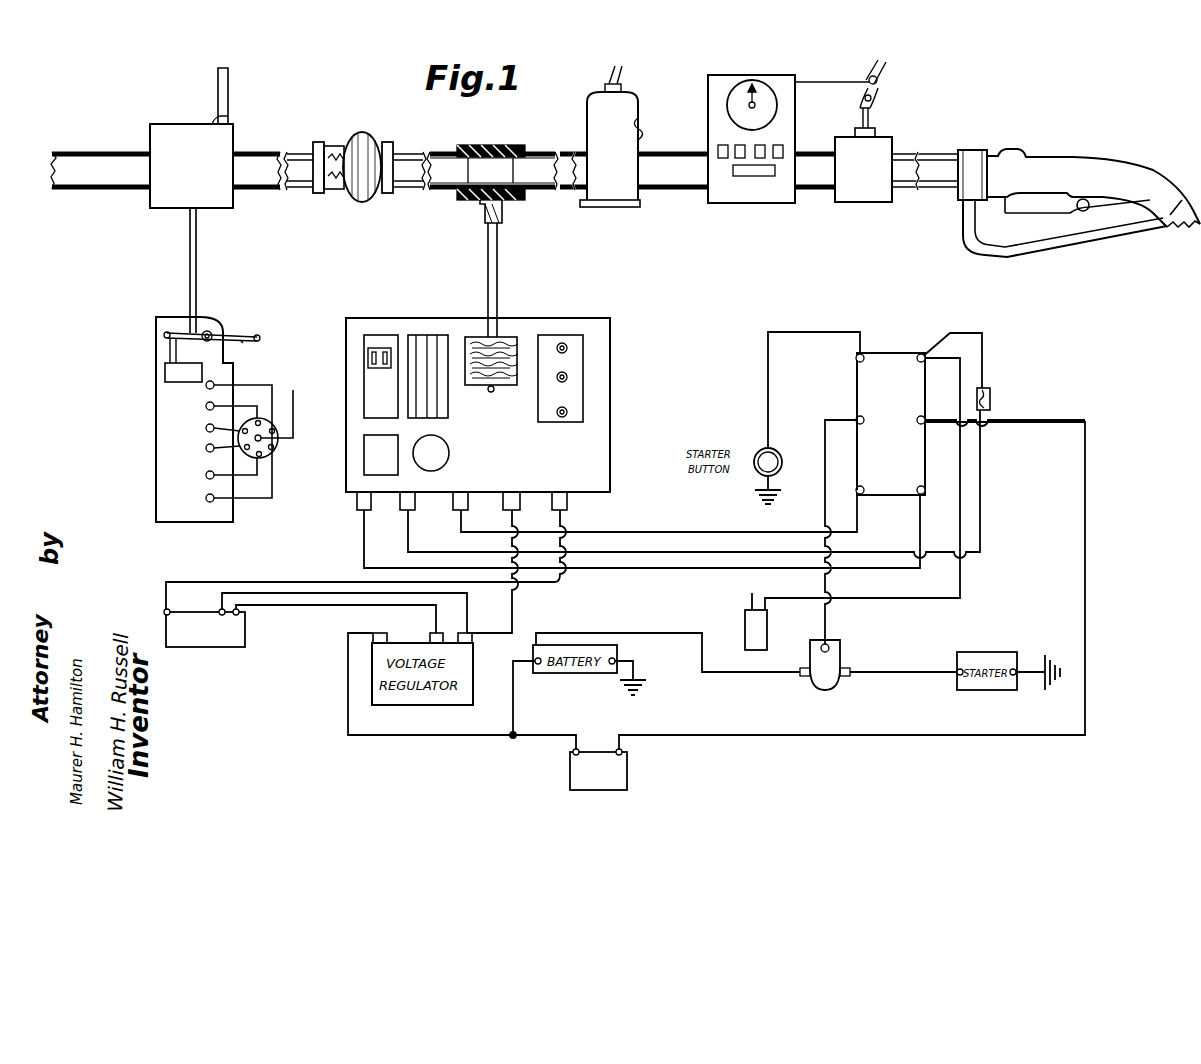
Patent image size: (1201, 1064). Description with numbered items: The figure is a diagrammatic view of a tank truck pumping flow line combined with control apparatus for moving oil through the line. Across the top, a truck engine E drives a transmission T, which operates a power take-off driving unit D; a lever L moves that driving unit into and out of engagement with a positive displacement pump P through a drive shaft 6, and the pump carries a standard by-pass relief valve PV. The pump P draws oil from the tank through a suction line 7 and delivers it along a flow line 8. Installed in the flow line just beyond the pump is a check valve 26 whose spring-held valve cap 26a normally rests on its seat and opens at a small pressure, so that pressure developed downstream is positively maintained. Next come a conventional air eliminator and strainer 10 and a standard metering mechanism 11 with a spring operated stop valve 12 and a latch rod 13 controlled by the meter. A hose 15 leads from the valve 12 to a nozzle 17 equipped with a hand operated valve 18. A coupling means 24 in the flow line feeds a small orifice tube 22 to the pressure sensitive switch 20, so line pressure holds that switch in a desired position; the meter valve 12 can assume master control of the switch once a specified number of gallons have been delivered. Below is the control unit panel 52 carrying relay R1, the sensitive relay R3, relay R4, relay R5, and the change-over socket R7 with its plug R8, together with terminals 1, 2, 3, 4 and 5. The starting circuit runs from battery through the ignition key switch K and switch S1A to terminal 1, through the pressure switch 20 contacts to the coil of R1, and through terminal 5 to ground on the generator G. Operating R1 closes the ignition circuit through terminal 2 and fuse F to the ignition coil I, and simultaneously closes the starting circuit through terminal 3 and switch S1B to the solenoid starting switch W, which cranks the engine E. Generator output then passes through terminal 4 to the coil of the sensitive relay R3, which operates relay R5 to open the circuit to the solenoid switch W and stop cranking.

The suction line 7 is at (85, 152).
The pump P is at (166, 208).
The by-pass relief valve PV is at (226, 100).
The flow line 8 is at (253, 152).
The drive shaft 6 is at (198, 268).
The check valve 26 is at (355, 172).
The spring-held valve cap 26a is at (362, 142).
The coupling means 24 is at (490, 147).
The small orifice tube 22 is at (500, 243).
The air eliminator and strainer 10 is at (642, 122).
The metering mechanism 11 is at (777, 200).
The latch rod 13 is at (836, 84).
The spring operated stop valve 12 is at (896, 145).
The hose 15 is at (942, 156).
The hand operated valve 18 is at (1022, 170).
The nozzle 17 is at (1170, 188).
The truck engine E is at (198, 409).
The driving unit D is at (180, 373).
The transmission T is at (230, 326).
The lever L is at (243, 343).
The relay panel 52 is at (483, 419).
The relay R1 is at (425, 335).
The pressure sensitive switch 20 is at (516, 329).
The sensitive relay R3 is at (438, 450).
The relay R4 is at (573, 396).
The relay R5 is at (370, 460).
The terminal socket R7 is at (370, 388).
The plug R8 is at (370, 352).
The terminal 1 is at (360, 505).
The terminal 2 is at (404, 508).
The terminal 3 is at (458, 506).
The terminal 4 is at (510, 505).
The terminal 5 is at (560, 504).
The switch S1A is at (924, 350).
The switch S1B is at (870, 352).
The fuse F is at (992, 397).
The ignition coil I is at (757, 628).
The solenoid starting switch W is at (832, 658).
The generator G is at (188, 647).
The ignition key switch K is at (630, 775).